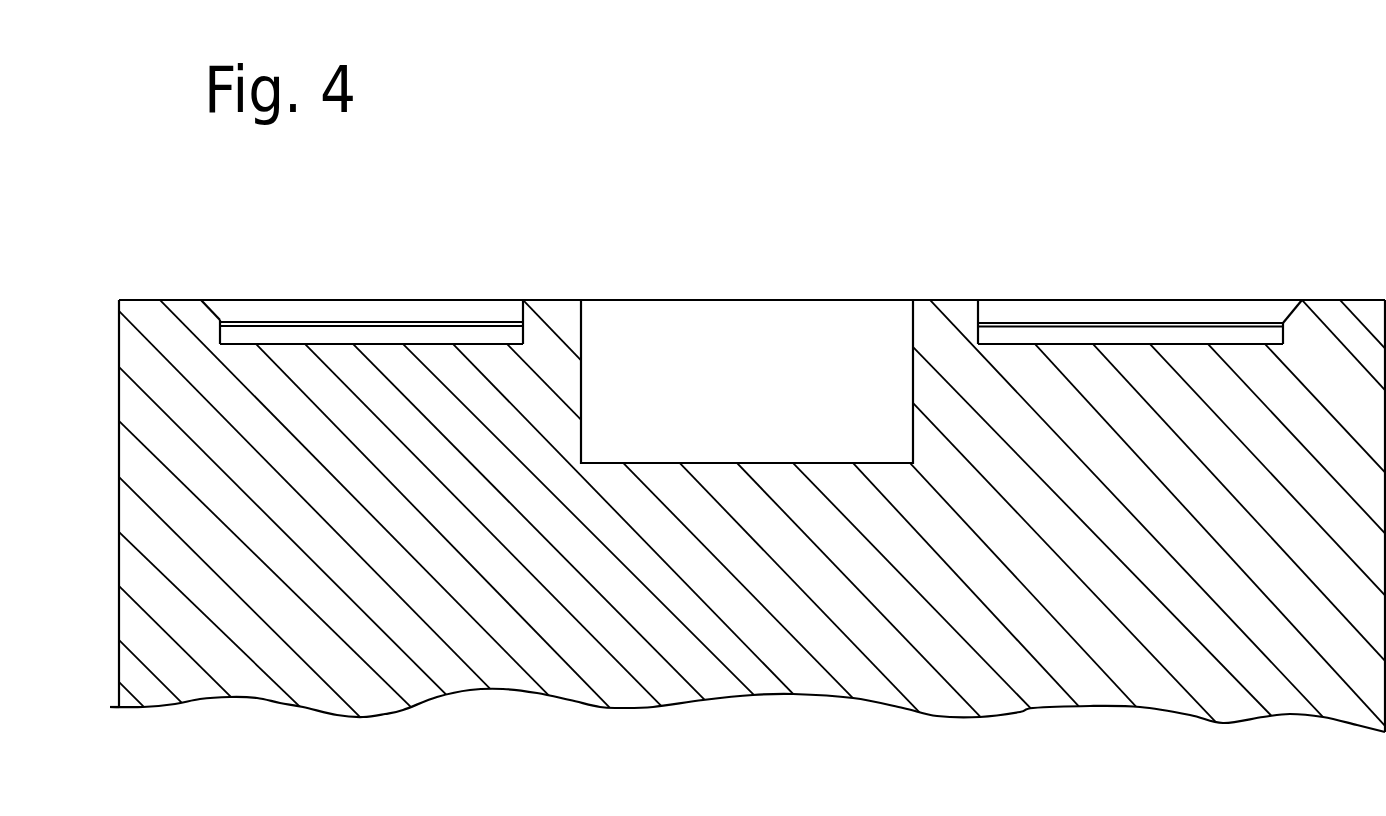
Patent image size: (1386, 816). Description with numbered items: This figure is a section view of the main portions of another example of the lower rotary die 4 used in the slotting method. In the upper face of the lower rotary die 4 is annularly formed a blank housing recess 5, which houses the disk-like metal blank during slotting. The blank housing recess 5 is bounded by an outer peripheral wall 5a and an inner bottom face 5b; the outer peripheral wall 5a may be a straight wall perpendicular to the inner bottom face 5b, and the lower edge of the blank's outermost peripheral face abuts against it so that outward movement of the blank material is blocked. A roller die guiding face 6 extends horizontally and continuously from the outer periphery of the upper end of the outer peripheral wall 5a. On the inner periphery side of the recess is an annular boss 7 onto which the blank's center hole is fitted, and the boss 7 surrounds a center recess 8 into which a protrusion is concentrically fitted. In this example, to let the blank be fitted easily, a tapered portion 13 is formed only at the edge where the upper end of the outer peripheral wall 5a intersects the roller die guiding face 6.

The lower rotary die 4 is at (798, 296).
The blank housing recess 5 is at (371, 270).
The outer peripheral wall 5a is at (224, 334).
The inner bottom face 5b is at (340, 342).
The roller die guiding face 6 is at (1325, 307).
The annular boss 7 is at (955, 307).
The center recess 8 is at (583, 335).
The tapered portion 13 is at (213, 306).